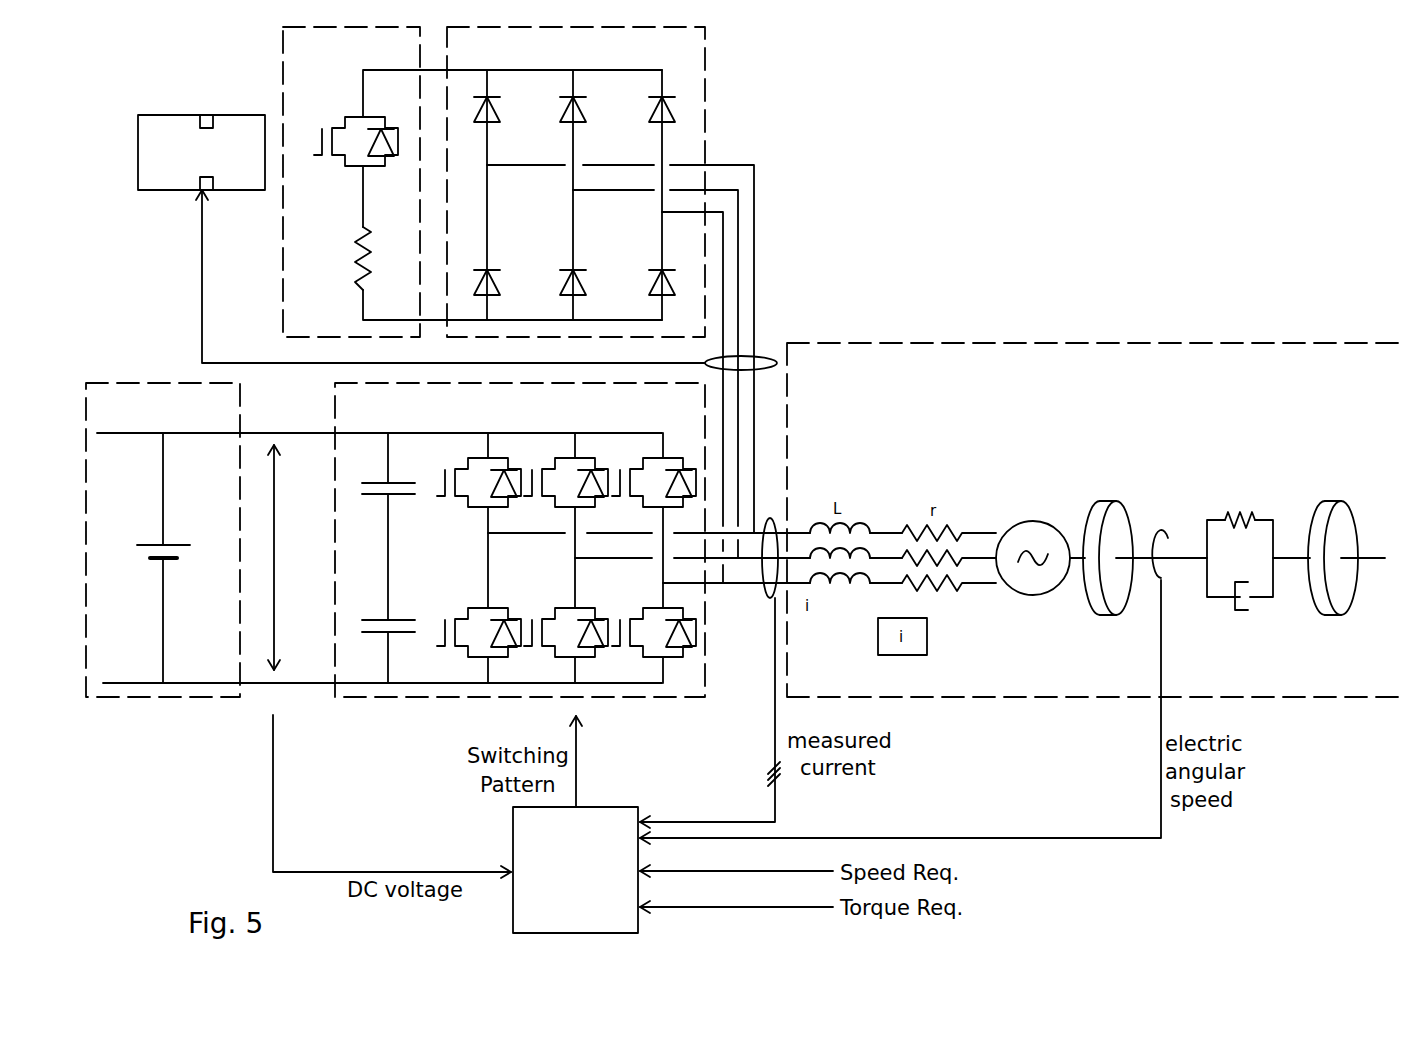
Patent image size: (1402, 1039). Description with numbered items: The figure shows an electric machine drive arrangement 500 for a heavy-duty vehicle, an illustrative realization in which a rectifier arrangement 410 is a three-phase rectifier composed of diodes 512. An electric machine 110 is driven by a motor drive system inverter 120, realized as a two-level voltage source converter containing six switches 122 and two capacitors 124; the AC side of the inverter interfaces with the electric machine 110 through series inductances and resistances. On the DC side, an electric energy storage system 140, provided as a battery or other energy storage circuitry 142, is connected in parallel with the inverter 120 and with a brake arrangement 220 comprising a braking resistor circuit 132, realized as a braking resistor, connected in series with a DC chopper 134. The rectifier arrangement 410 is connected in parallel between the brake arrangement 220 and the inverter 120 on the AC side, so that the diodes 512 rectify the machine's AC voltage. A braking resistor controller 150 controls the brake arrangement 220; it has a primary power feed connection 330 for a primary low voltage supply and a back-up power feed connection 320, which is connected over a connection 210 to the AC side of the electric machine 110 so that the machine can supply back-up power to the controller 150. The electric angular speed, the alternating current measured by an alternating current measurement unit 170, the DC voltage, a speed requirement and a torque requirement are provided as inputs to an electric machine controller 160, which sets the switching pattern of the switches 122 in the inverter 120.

The electric machine drive arrangement 500 is at (1034, 105).
The electric machine 110 is at (1118, 381).
The motor drive system inverter 120 is at (541, 422).
The switches 122 is at (592, 464).
The capacitors 124 is at (402, 618).
The braking resistor circuit 132 is at (358, 252).
The DC chopper 134 is at (348, 164).
The electric energy storage system 140 is at (184, 422).
The energy storage circuitry 142 is at (148, 552).
The braking resistor controller 150 is at (222, 165).
The electric machine controller 160 is at (596, 883).
The alternating current measurement unit 170 is at (771, 598).
The connection 210 is at (201, 312).
The brake chopper 220 is at (369, 65).
The back-up power feed connection 320 is at (200, 186).
The primary power feed connection 330 is at (203, 116).
The rectifier arrangement 410 is at (598, 63).
The diodes 512 is at (492, 288).